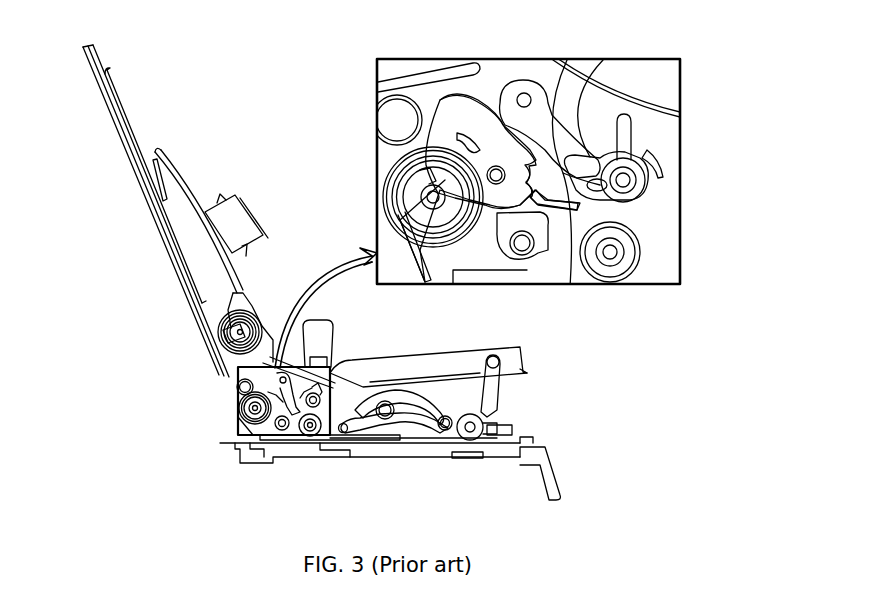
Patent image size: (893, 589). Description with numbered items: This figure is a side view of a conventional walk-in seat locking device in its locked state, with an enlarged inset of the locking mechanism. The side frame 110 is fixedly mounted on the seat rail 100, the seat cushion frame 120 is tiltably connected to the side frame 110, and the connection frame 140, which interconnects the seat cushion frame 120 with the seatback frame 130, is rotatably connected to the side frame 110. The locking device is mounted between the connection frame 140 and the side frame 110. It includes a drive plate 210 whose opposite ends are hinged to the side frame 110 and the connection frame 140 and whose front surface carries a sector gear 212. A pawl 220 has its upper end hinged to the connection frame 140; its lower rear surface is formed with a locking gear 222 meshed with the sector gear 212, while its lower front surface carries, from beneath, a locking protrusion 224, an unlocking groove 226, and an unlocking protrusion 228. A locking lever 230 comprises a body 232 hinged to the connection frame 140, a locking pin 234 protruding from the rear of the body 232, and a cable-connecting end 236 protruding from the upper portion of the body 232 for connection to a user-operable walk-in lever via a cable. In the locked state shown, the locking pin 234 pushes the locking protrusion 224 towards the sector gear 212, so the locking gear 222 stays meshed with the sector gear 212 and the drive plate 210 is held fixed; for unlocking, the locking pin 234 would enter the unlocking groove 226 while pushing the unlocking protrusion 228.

The seat rail 100 is at (400, 452).
The side frame 110 is at (329, 436).
The seat cushion frame 120 is at (445, 356).
The seatback frame 130 is at (141, 153).
The connection frame 140 is at (240, 366).
The drive plate 210 is at (440, 98).
The sector gear 212 is at (528, 172).
The pawl 220 is at (562, 101).
The locking gear 222 is at (525, 248).
The locking protrusion 224 is at (563, 200).
The unlocking groove 226 is at (585, 110).
The unlocking protrusion 228 is at (638, 148).
The locking lever 230 is at (652, 188).
The body 232 is at (660, 171).
The locking pin 234 is at (608, 255).
The cable-connecting end 236 is at (640, 125).